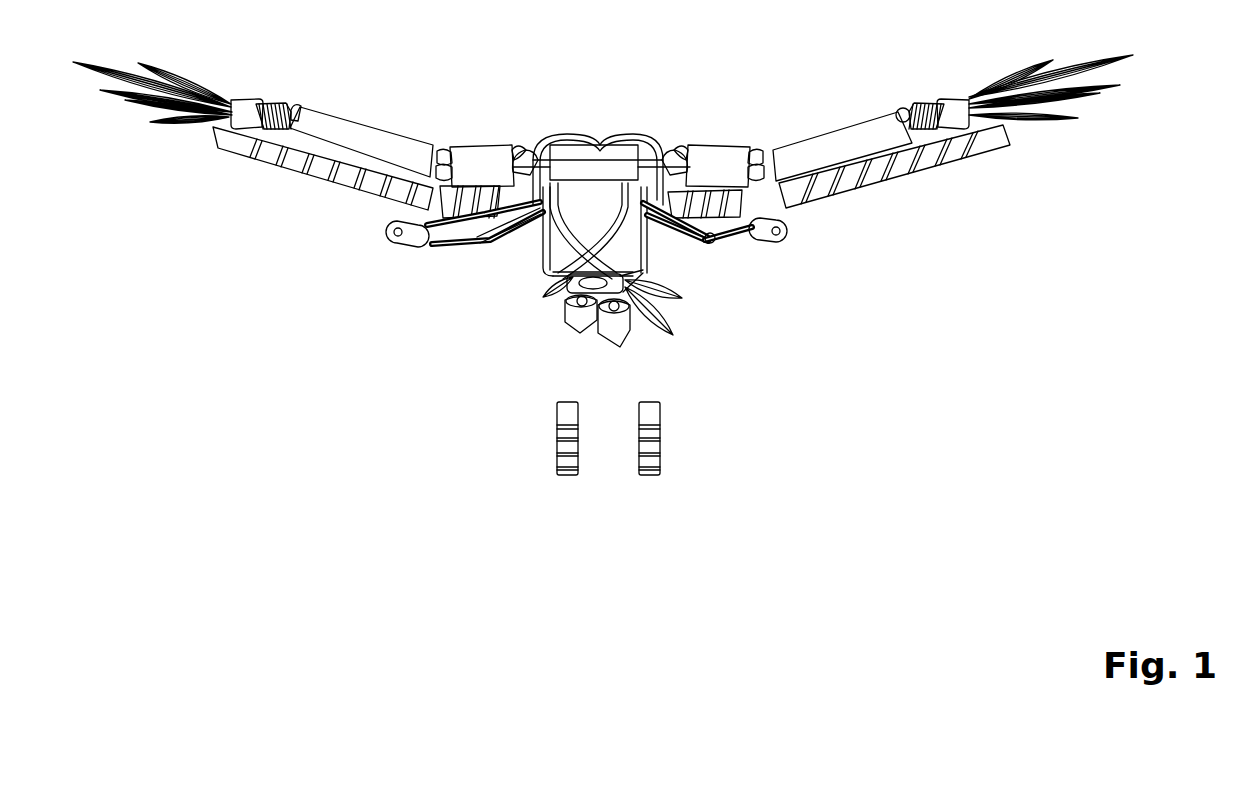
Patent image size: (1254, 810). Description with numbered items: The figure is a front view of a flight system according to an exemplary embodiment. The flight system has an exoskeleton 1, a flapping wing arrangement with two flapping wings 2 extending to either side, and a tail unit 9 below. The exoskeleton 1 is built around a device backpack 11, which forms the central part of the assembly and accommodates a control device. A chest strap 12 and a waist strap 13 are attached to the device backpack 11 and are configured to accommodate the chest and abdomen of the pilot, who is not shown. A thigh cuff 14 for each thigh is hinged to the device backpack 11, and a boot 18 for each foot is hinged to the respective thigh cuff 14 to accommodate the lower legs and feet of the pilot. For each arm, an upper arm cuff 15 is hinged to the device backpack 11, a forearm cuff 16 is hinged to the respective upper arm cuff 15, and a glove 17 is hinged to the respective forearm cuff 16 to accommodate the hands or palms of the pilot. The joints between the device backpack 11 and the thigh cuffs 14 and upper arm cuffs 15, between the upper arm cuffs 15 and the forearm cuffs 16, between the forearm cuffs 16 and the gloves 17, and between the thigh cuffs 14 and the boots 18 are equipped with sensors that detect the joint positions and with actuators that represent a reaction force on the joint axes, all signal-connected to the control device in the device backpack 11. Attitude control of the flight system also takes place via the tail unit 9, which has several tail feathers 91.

The exoskeleton 1 is at (448, 425).
The flapping wing 2 is at (365, 122).
The tail unit 9 is at (674, 331).
The tail feather 91 is at (660, 293).
The device backpack 11 is at (597, 143).
The chest strap 12 is at (548, 254).
The waist strap 13 is at (597, 320).
The thigh cuff 14 is at (560, 307).
The upper arm cuff 15 is at (695, 245).
The forearm cuff 16 is at (745, 248).
The glove 17 is at (788, 247).
The boot 18 is at (662, 438).